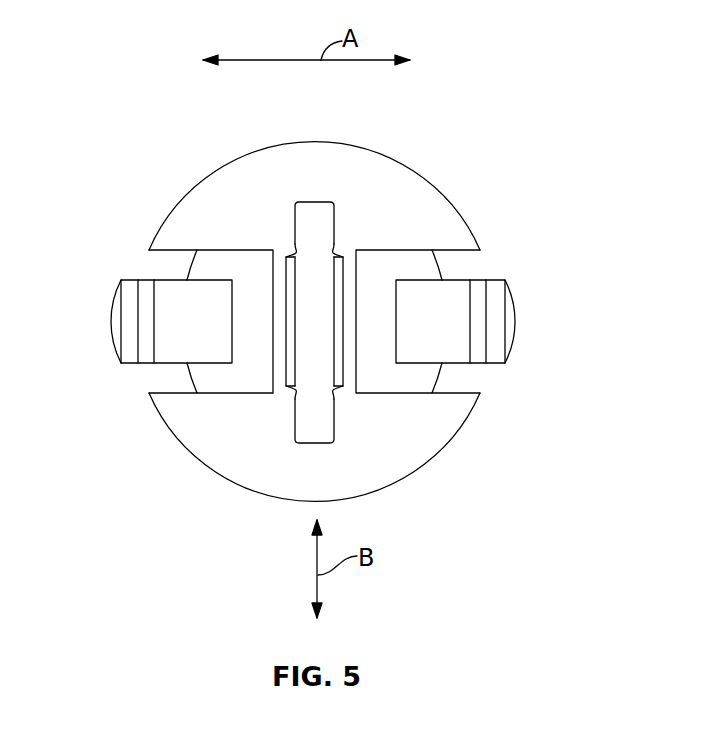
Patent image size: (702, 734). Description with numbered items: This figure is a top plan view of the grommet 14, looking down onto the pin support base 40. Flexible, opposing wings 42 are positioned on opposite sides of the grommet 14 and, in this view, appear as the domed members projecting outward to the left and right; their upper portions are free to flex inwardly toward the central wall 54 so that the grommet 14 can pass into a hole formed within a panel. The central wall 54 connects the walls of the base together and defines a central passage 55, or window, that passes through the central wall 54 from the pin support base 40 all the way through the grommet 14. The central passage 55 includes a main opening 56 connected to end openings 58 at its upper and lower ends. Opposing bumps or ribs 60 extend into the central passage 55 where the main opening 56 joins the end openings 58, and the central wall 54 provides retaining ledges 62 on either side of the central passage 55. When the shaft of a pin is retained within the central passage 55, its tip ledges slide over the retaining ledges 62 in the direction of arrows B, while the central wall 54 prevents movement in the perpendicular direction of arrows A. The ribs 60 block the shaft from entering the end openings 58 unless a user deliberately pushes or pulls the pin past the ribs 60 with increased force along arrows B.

The grommet 14 is at (572, 83).
The pin support base 40 is at (440, 217).
The wings 42 is at (108, 316).
The central wall 54 is at (276, 342).
The central passage 55 is at (318, 318).
The main opening 56 is at (307, 288).
The end openings 58 is at (312, 232).
The ribs 60 is at (292, 247).
The retaining ledges 62 is at (287, 306).